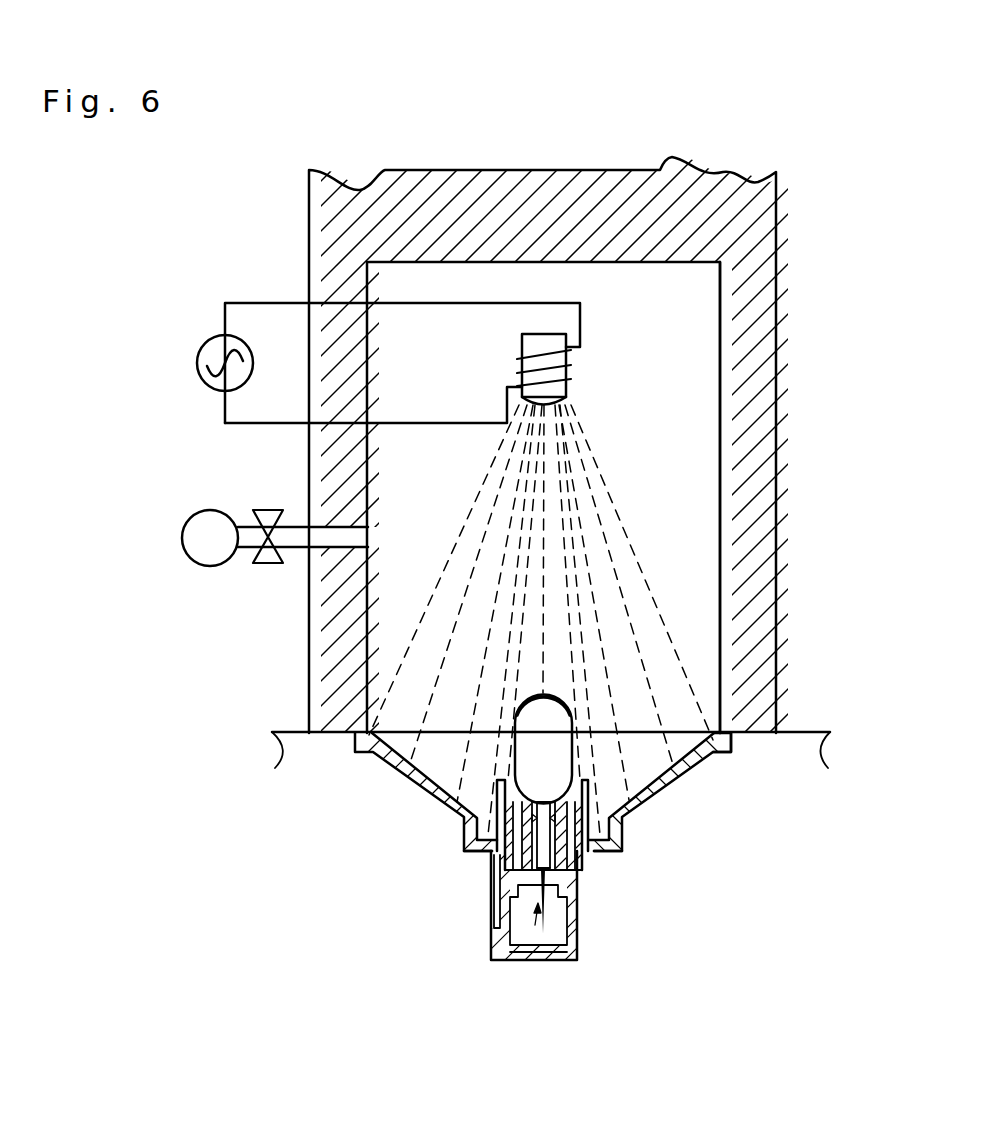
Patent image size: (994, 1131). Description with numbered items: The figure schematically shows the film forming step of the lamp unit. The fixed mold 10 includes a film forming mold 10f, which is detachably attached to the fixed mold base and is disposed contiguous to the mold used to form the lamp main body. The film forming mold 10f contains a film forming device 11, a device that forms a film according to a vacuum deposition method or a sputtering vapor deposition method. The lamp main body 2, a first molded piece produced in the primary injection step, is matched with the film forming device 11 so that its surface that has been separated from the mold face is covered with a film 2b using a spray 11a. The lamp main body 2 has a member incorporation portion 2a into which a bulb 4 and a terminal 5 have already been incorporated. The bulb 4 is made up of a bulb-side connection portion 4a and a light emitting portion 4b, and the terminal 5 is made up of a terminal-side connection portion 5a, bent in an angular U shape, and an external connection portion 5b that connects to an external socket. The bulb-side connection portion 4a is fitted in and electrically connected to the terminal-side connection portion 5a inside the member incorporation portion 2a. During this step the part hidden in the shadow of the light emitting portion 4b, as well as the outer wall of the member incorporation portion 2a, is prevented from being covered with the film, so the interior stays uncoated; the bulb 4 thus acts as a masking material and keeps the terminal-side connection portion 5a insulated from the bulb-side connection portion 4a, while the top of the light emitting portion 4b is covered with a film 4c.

The fixed mold 10 is at (394, 158).
The film forming mold 10f is at (745, 343).
The film forming device 11 is at (675, 447).
The spray 11a is at (547, 340).
The bulb 4 is at (493, 777).
The bulb-side connection portion 4a is at (557, 848).
The light emitting portion 4b is at (525, 762).
The film 4c is at (543, 695).
The lamp main body 2 is at (657, 785).
The member incorporation portion 2a is at (508, 866).
The film 2b is at (690, 755).
The terminal 5 is at (536, 902).
The terminal-side connection portion 5a is at (540, 847).
The external connection portion 5b is at (545, 916).